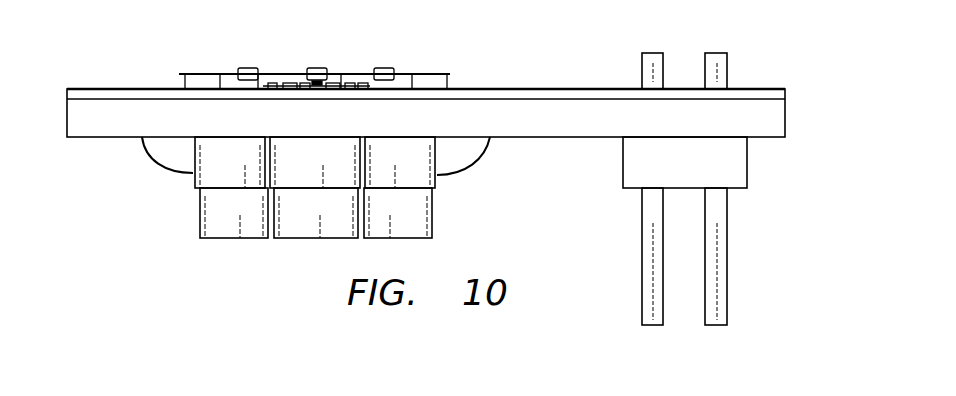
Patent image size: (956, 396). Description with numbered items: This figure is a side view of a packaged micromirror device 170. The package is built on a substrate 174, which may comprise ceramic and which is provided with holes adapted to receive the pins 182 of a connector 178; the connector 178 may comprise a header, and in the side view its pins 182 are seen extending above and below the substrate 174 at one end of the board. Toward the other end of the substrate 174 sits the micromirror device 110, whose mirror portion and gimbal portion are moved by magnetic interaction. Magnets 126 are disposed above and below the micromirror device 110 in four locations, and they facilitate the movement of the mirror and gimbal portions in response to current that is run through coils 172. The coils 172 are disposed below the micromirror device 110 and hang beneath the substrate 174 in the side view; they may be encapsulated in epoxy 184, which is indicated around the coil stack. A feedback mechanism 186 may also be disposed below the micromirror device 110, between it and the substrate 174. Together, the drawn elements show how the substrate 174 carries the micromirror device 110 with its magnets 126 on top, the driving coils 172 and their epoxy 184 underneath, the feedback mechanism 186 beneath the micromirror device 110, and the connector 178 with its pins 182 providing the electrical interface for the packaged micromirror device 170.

The packaged micromirror device 170 is at (103, 68).
The substrate 174 is at (787, 110).
The micromirror device 110 is at (437, 74).
The magnets 126 is at (383, 73).
The feedback mechanism 186 is at (298, 83).
The epoxy 184 is at (162, 152).
The coils 172 is at (198, 220).
The connector 178 is at (747, 158).
The pins 182 is at (728, 255).